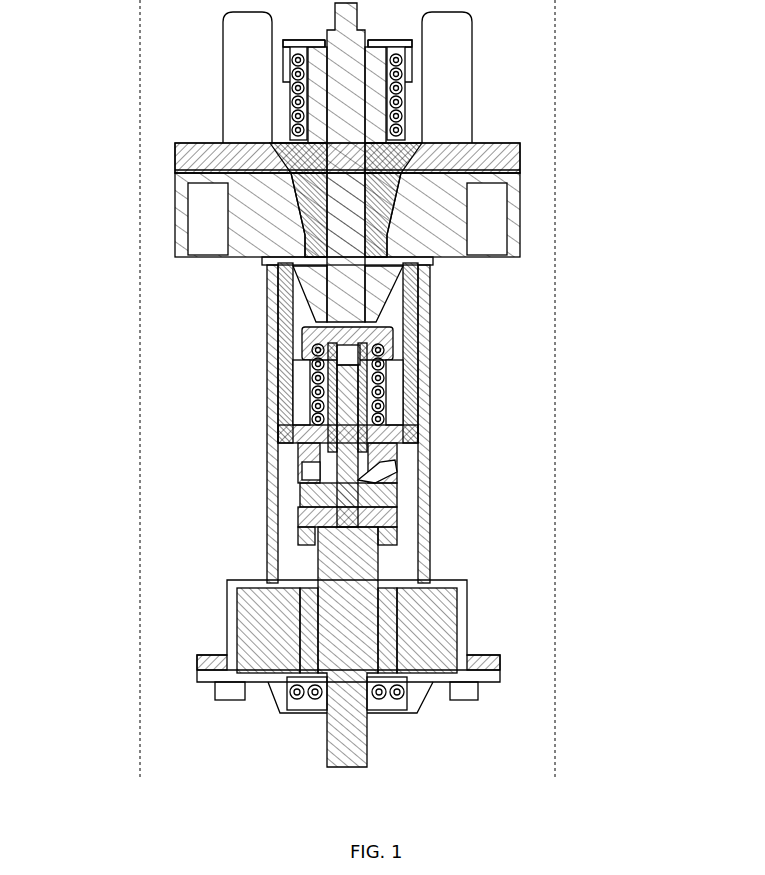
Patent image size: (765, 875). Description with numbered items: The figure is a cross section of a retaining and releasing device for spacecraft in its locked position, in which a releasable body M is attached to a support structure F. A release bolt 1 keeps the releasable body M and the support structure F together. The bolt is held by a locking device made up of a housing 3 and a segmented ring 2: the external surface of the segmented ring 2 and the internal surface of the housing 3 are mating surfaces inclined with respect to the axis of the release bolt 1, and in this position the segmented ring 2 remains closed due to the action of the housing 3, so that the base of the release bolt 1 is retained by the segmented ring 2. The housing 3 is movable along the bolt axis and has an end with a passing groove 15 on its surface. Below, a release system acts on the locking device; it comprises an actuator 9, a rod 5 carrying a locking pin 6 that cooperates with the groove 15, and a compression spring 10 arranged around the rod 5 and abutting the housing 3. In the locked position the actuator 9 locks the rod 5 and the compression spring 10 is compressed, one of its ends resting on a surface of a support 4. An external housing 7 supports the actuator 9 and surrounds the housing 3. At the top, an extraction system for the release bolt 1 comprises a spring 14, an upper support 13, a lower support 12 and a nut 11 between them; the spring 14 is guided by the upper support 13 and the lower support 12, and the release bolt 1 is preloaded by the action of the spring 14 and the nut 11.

The release bolt 1 is at (345, 101).
The segmented ring 2 is at (380, 282).
The housing 3 is at (277, 428).
The support 4 is at (277, 333).
The rod 5 is at (352, 557).
The locking pin 6 is at (397, 517).
The external housing 7 is at (272, 533).
The actuator 9 is at (432, 620).
The compression spring 10 is at (385, 372).
The nut 11 is at (373, 131).
The lower support 12 is at (175, 154).
The upper support 13 is at (283, 43).
The spring 14 is at (305, 85).
The passing groove 15 is at (380, 473).
The releasable body M is at (520, 157).
The support structure F is at (520, 215).